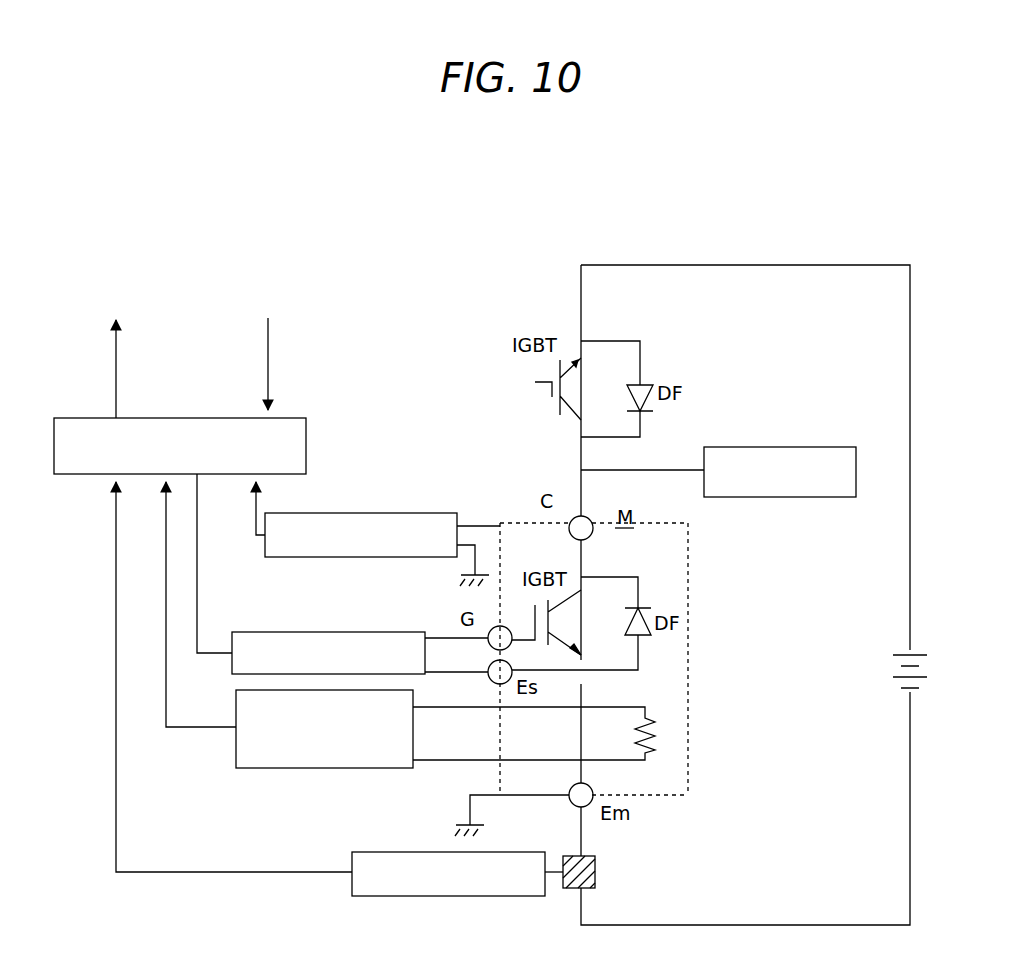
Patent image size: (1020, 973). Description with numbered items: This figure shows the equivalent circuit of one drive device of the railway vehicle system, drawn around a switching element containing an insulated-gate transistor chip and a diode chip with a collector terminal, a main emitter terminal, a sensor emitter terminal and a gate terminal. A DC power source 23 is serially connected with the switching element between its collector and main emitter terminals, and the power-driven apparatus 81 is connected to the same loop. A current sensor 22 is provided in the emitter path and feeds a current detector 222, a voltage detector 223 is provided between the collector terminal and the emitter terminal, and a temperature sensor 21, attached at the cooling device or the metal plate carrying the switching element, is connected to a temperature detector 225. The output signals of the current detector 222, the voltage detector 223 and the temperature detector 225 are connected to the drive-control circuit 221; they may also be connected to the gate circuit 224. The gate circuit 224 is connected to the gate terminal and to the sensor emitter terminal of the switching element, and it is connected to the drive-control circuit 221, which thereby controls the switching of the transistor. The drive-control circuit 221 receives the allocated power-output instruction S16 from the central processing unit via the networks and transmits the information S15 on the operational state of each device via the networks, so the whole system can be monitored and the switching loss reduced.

The information on operational state of each device S15 is at (128, 213).
The allocated power-output instruction S16 is at (320, 237).
The drive-control circuit 221 is at (290, 418).
The current detector 222 is at (392, 898).
The voltage detector 223 is at (362, 513).
The gate circuit 224 is at (296, 632).
The temperature detector 225 is at (280, 770).
The temperature sensor 21 is at (660, 735).
The current sensor 22 is at (595, 873).
The DC power source 23 is at (895, 650).
The power-driven apparatus 81 is at (768, 447).